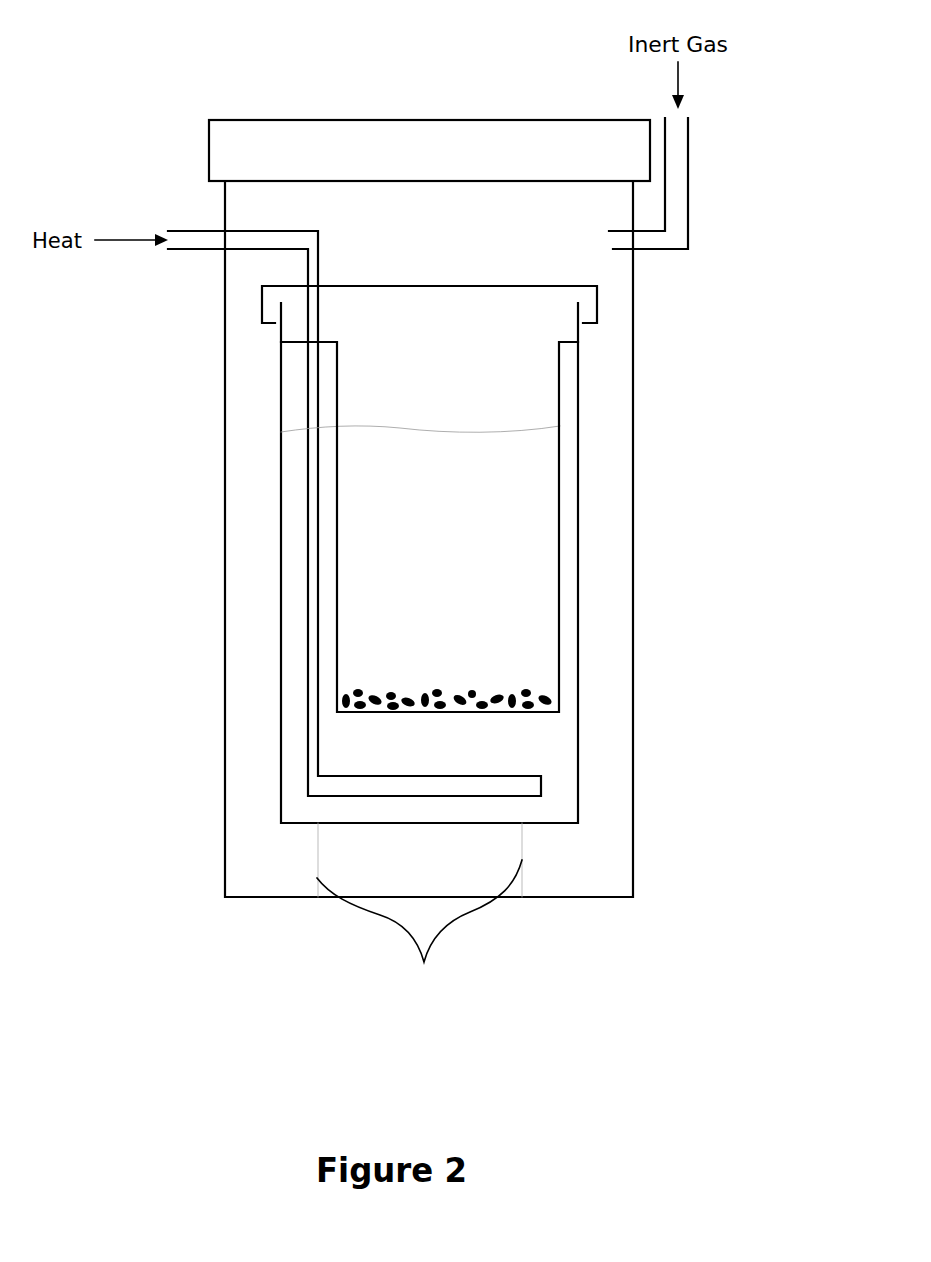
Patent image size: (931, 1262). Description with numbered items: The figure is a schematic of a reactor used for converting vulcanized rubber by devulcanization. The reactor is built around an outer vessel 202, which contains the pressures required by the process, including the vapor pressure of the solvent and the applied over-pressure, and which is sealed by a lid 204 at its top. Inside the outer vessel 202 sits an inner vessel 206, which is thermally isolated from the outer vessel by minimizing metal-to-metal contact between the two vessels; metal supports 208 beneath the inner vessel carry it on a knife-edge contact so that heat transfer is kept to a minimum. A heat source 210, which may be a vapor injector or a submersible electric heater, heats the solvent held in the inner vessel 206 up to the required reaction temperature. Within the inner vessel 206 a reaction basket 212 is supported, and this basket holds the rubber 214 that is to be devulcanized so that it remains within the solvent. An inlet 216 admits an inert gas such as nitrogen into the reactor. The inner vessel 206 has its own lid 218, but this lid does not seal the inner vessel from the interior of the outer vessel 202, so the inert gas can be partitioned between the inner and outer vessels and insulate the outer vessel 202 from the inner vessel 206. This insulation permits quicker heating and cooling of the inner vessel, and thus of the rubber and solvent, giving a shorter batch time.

The outer vessel 202 is at (225, 360).
The lid 204 is at (236, 141).
The inner vessel 206 is at (281, 452).
The metal supports 208 is at (419, 930).
The heat source 210 is at (318, 519).
The reaction basket 212 is at (337, 588).
The rubber 214 is at (355, 675).
The inlet 216 is at (688, 230).
The lid 218 is at (597, 300).